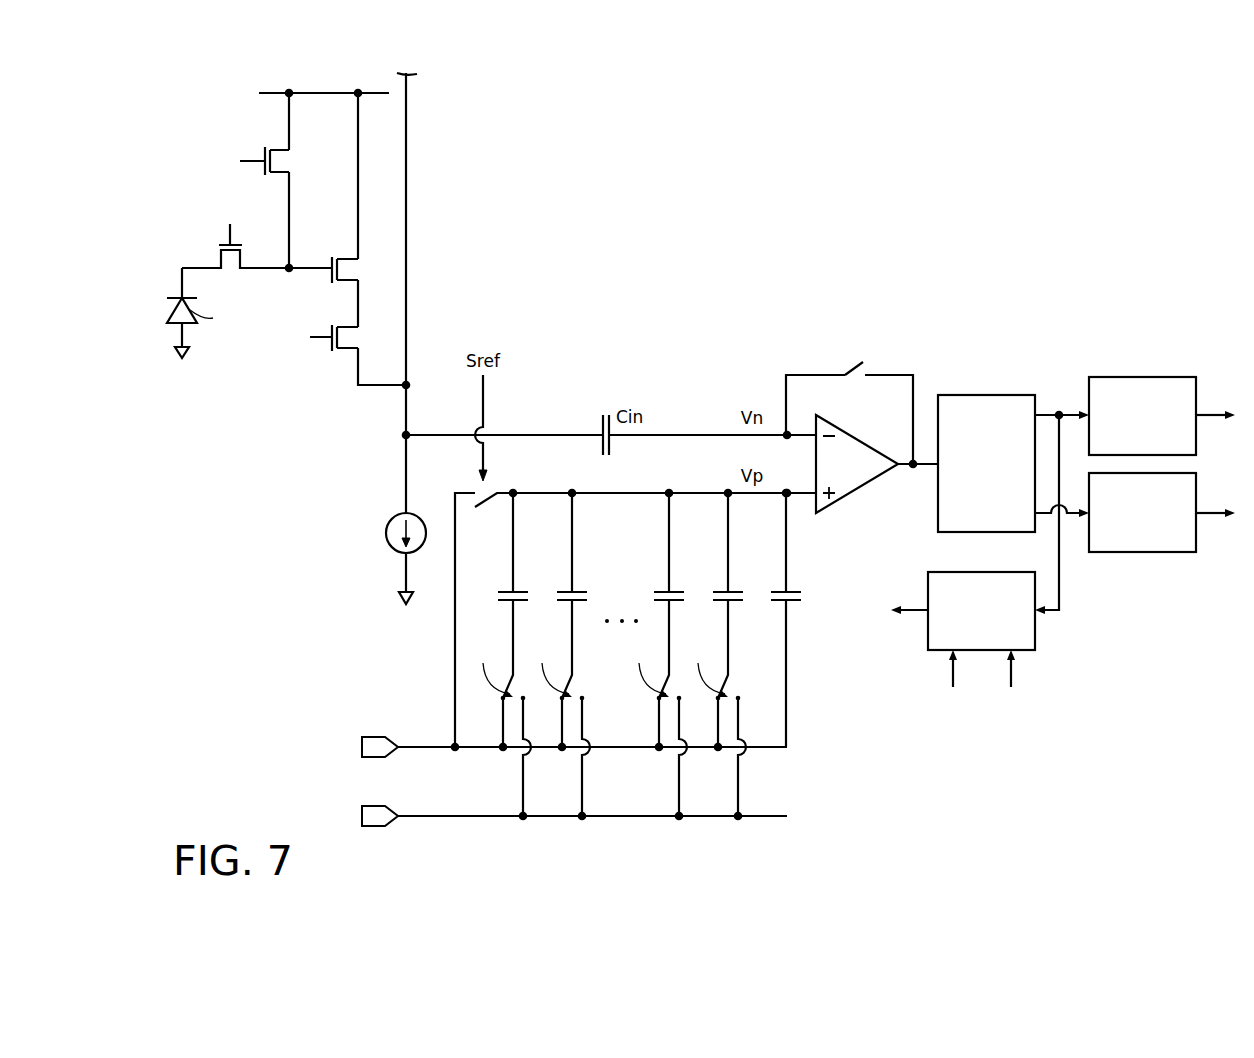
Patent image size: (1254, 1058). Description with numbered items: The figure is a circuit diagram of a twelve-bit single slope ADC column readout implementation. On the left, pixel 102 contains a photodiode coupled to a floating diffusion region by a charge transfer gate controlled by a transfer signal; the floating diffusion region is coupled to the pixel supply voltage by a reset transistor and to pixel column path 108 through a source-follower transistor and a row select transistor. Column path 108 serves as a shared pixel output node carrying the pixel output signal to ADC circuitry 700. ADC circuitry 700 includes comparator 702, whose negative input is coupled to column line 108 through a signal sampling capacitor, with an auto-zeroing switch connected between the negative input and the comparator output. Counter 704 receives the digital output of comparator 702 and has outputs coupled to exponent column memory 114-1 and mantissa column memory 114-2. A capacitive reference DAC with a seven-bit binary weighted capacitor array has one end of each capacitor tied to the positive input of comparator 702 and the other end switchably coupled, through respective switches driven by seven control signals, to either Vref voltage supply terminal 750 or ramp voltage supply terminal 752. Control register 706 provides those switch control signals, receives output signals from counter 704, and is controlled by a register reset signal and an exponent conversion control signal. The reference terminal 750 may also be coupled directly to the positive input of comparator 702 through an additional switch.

The pixel 102 is at (162, 83).
The pixel column path 108 is at (407, 168).
The exponent column memory 114-1 is at (1147, 377).
The mantissa column memory 114-2 is at (1147, 552).
The ADC circuitry 700 is at (445, 826).
The comparator 702 is at (850, 478).
The counter 704 is at (993, 397).
The control register 706 is at (975, 575).
The Vref voltage supply terminal 750 is at (378, 737).
The ramp voltage supply terminal 752 is at (378, 806).